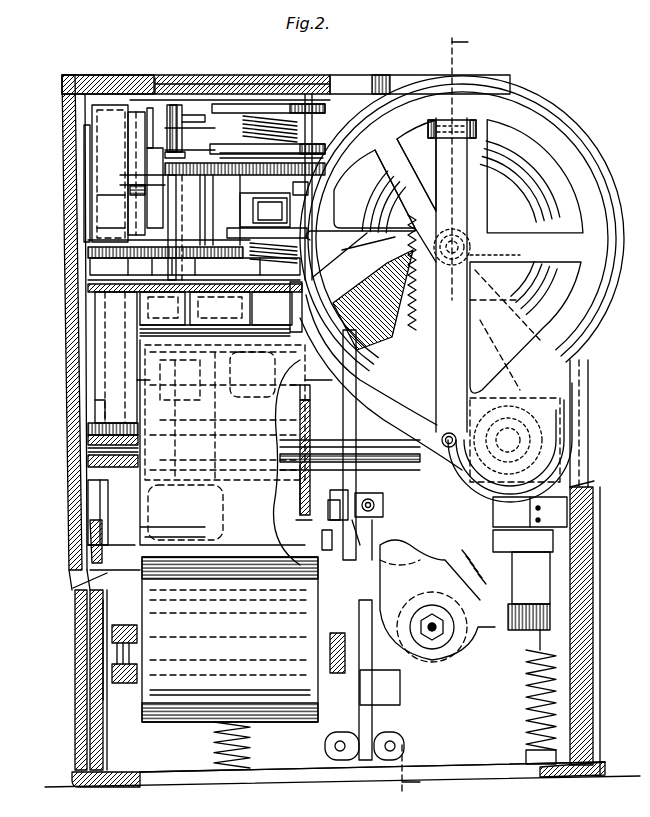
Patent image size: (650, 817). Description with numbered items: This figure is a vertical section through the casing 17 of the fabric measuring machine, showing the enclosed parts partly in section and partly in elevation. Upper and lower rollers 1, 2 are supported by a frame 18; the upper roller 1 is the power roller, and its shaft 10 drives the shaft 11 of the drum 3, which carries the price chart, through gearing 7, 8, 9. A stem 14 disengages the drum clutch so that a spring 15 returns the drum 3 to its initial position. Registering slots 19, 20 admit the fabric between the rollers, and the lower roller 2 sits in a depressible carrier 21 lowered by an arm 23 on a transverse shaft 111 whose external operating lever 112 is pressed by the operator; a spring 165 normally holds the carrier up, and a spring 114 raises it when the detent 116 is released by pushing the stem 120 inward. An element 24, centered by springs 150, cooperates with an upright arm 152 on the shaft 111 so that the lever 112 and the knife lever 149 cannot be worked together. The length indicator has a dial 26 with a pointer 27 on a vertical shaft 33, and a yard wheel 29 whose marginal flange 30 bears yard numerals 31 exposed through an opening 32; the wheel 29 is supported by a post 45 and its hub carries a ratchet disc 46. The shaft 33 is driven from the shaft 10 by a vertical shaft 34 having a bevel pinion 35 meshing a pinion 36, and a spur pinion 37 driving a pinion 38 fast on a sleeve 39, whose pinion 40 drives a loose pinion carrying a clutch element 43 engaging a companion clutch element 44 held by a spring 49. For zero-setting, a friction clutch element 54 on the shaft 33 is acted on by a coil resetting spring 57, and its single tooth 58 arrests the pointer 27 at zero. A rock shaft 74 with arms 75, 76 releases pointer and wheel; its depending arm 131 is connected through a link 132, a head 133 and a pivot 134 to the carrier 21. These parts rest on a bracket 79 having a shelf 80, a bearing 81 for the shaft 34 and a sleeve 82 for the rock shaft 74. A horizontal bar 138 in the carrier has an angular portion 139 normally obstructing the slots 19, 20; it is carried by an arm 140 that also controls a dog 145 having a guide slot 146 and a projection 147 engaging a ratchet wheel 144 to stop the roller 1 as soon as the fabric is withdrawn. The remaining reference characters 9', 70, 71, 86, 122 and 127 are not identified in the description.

The upper roller 1 is at (148, 508).
The lower roller 2 is at (172, 722).
The drum 3 is at (432, 418).
The gearing 7 is at (437, 600).
The gearing 8 is at (520, 441).
The gearing 9 is at (462, 234).
The wheel stop 9' is at (360, 223).
The shaft 10 is at (400, 420).
The shaft 11 is at (472, 245).
The stem 14 is at (478, 255).
The spring 15 is at (495, 215).
The casing 17 is at (76, 511).
The frame 18 is at (73, 537).
The slot 19 is at (75, 572).
The slot 20 is at (100, 575).
The depressible carrier 21 is at (125, 683).
The arm 23 is at (435, 600).
The element 24 is at (530, 512).
The dial 26 is at (180, 97).
The pointer 27 is at (230, 94).
The wheel 29 is at (84, 127).
The marginal flange 30 is at (92, 115).
The numerals 31 is at (105, 205).
The opening 32 is at (125, 76).
The vertical shaft 33 is at (302, 144).
The vertical shaft 34 is at (95, 400).
The bevel pinion 35 is at (88, 432).
The pinion 36 is at (178, 500).
The spur pinion 37 is at (88, 252).
The pinion 38 is at (195, 266).
The sleeve 39 is at (255, 210).
The pinion 40 is at (183, 128).
The clutch element 43 is at (302, 189).
The clutch element 44 is at (250, 175).
The post 45 is at (147, 112).
The disc 46 is at (168, 232).
The spring 49 is at (257, 129).
The friction clutch element 54 is at (262, 239).
The coil resetting spring 57 is at (364, 282).
The tooth 58 is at (270, 201).
The pendulum rod 70 is at (460, 167).
The bracket 71 is at (480, 120).
The rock shaft 74 is at (220, 304).
The arm 75 is at (297, 307).
The arm 76 is at (162, 304).
The bracket 79 is at (95, 345).
The shelf 80 is at (72, 282).
The supporting bearing 81 is at (138, 378).
The supporting sleeve 82 is at (216, 310).
The slide 86 is at (145, 173).
The transverse shaft 111 is at (448, 636).
The operating lever 112 is at (250, 387).
The spring 114 is at (250, 745).
The detent 116 is at (400, 555).
The stem 120 is at (384, 550).
The bracket 122 is at (369, 507).
The block 127 is at (398, 660).
The depending arm 131 is at (350, 445).
The link 132 is at (383, 503).
The head 133 is at (362, 532).
The horizontal axis 134 is at (331, 515).
The horizontal bar 138 is at (230, 639).
The angular portion 139 is at (78, 620).
The arm 140 is at (322, 545).
The ratchet wheel 144 is at (316, 392).
The dog 145 is at (300, 522).
The guide slot 146 is at (290, 490).
The projection 147 is at (292, 462).
The operating lever 149 is at (225, 412).
The springs 150 is at (592, 506).
The upright arm 152 is at (496, 570).
The spring 165 is at (528, 705).